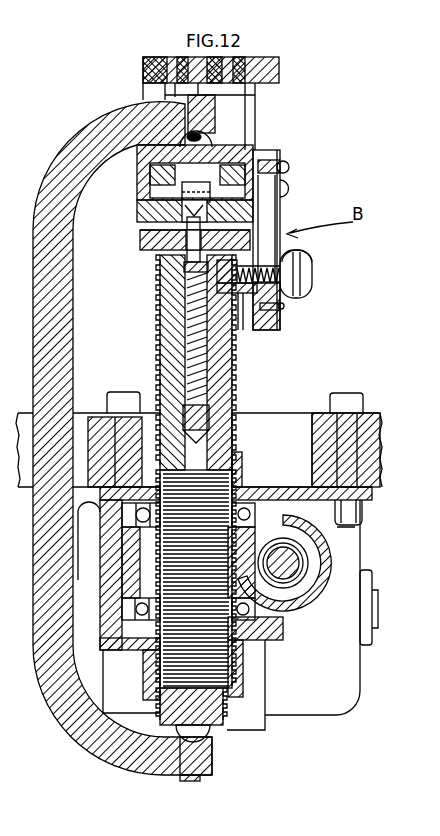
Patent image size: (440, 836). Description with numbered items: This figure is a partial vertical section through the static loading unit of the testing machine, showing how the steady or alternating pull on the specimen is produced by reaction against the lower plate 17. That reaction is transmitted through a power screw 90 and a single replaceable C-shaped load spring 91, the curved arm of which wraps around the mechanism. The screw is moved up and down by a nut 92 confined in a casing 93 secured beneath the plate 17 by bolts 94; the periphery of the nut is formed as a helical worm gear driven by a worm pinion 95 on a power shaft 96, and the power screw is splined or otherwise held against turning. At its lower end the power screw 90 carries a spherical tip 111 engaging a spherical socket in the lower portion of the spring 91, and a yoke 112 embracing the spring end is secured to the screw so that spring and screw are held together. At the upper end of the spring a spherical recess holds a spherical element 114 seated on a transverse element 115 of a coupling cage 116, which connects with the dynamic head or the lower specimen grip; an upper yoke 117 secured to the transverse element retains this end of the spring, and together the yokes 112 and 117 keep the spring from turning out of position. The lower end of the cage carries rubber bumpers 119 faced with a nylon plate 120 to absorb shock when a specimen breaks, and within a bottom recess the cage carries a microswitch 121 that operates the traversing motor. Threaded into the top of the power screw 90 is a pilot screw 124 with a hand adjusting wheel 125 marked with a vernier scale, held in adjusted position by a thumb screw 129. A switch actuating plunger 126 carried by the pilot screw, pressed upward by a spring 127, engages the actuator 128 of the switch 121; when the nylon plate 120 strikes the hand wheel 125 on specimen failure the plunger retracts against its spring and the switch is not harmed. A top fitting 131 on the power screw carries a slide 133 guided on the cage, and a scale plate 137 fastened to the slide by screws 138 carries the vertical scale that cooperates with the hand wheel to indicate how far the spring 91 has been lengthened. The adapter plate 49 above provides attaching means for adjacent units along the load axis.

The lower plate 17 is at (376, 424).
The adapter plate 49 is at (281, 70).
The power screw 90 is at (233, 393).
The C-shaped load spring 91 is at (73, 367).
The nut 92 is at (133, 582).
The casing 93 is at (311, 618).
The bolts 94 is at (352, 535).
The worm pinion 95 is at (310, 564).
The power shaft 96 is at (290, 578).
The spherical tip 111 is at (212, 733).
The yoke 112 is at (186, 783).
The spherical element 114 is at (212, 141).
The transverse element 115 is at (253, 160).
The coupling cage 116 is at (255, 118).
The yoke 117 is at (216, 99).
The rubber bumpers 119 is at (255, 207).
The nylon plate 120 is at (255, 225).
The microswitch 121 is at (140, 208).
The pilot screw 124 is at (160, 322).
The hand adjusting wheel 125 is at (140, 241).
The switch actuating plunger 126 is at (183, 270).
The spring 127 is at (228, 366).
The actuator 128 is at (186, 252).
The thumb screw 129 is at (312, 290).
The top fitting 131 is at (248, 305).
The slide 133 is at (265, 332).
The scale plate 137 is at (311, 256).
The screws 138 is at (283, 307).